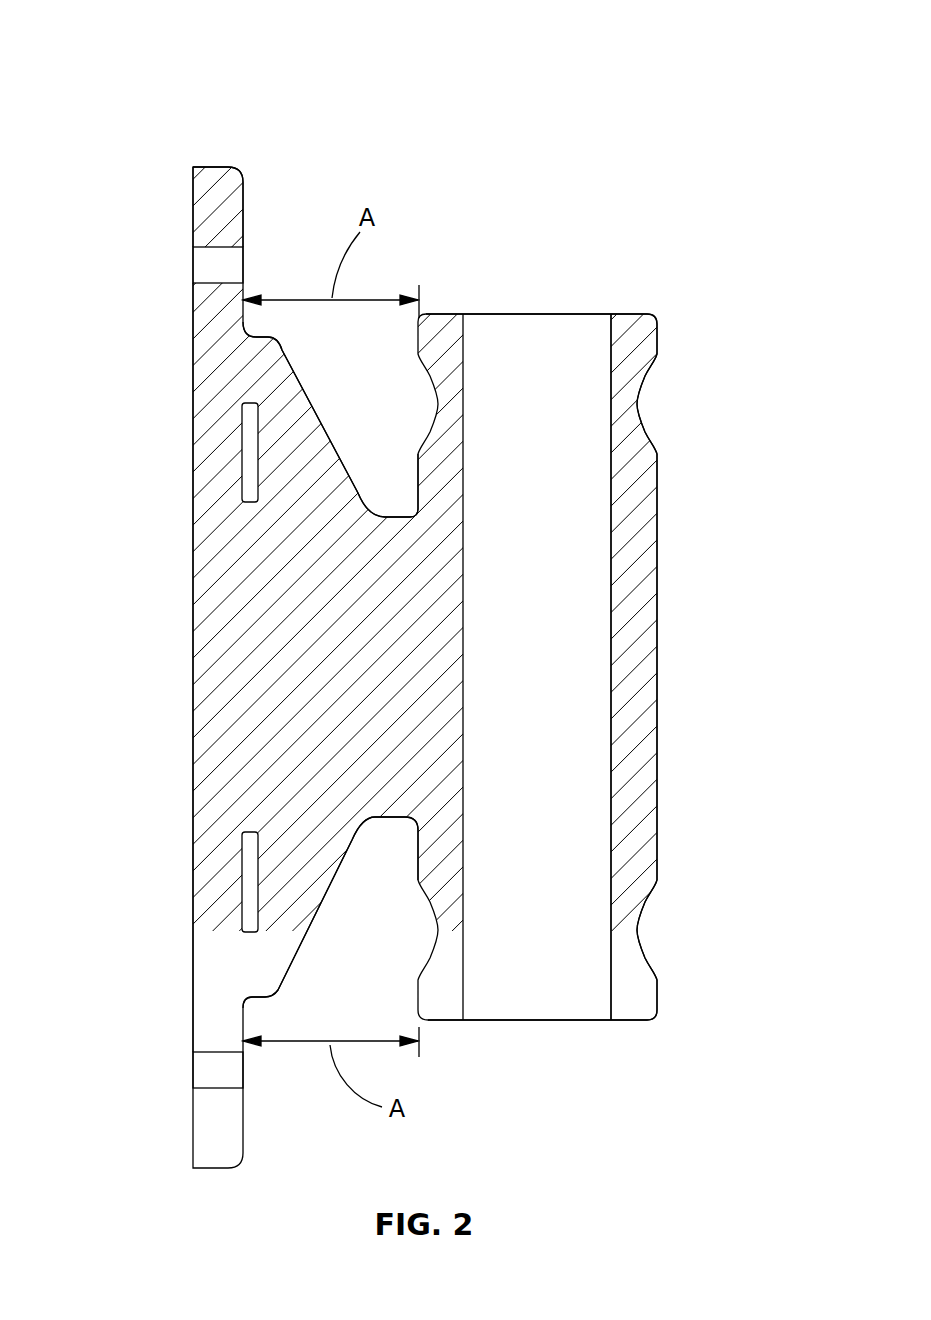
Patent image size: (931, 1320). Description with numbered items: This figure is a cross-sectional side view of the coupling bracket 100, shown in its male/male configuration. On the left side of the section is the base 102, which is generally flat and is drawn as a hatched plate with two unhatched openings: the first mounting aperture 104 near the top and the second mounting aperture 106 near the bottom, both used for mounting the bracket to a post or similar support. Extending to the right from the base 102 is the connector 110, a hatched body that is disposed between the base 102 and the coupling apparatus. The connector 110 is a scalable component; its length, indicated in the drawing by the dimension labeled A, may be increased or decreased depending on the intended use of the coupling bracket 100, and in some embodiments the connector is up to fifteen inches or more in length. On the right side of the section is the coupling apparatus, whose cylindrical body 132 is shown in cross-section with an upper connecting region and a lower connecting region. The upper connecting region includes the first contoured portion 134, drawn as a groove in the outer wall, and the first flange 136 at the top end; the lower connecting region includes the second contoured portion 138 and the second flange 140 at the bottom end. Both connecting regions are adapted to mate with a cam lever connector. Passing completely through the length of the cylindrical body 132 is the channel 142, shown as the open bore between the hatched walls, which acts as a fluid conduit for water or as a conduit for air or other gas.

The coupling bracket 100 is at (545, 223).
The base 102 is at (216, 167).
The first mounting aperture 104 is at (193, 252).
The second mounting aperture 106 is at (193, 1087).
The connector 110 is at (252, 643).
The cylindrical body 132 is at (657, 642).
The first contoured portion 134 is at (637, 405).
The first flange 136 is at (657, 316).
The second contoured portion 138 is at (637, 930).
The second flange 140 is at (655, 1014).
The channel 142 is at (527, 623).